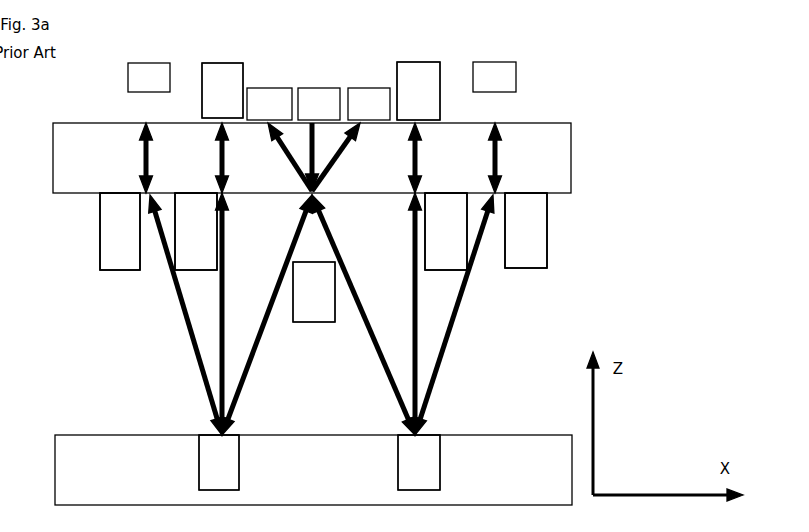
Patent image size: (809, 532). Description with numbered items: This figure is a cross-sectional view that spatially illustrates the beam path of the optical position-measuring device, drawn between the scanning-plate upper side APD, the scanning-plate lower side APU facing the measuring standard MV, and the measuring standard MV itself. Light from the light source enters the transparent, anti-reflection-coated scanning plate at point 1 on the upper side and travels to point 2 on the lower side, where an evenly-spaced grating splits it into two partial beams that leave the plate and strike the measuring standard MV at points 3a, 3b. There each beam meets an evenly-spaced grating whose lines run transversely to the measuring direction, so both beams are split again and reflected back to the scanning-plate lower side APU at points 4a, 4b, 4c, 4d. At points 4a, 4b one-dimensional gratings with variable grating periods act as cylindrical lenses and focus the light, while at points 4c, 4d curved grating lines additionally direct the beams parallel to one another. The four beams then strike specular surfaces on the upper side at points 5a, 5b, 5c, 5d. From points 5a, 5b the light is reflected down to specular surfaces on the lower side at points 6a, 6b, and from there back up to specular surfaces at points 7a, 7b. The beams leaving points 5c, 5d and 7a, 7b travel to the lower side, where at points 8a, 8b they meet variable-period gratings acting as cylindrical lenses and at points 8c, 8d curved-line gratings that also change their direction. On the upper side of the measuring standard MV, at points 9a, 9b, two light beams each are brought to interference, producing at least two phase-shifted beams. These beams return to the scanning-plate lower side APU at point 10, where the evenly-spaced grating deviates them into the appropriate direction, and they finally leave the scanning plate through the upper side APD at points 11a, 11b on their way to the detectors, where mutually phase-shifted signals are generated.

The light entry point 1 is at (319, 139).
The grating impact point 2 is at (318, 315).
The measuring standard impact point 3a is at (419, 462).
The measuring standard impact point 3b is at (219, 462).
The lower-side impact point 4a is at (438, 314).
The lower-side impact point 4b is at (202, 314).
The lower-side impact point 4c is at (480, 314).
The lower-side impact point 4d is at (161, 314).
The upper-side specular impact point 5a is at (418, 127).
The upper-side specular impact point 5b is at (222, 128).
The upper-side specular impact point 5c is at (494, 127).
The upper-side specular impact point 5d is at (149, 128).
The lower-side specular impact point 6a is at (446, 231).
The lower-side specular impact point 6b is at (196, 231).
The upper-side specular impact point 7a is at (418, 91).
The upper-side specular impact point 7b is at (222, 90).
The lower-side lens grating impact point 8a is at (446, 231).
The lower-side lens grating impact point 8b is at (196, 231).
The lower-side curved grating impact point 8c is at (526, 230).
The lower-side curved grating impact point 8d is at (120, 231).
The interference point 9a is at (419, 462).
The interference point 9b is at (219, 462).
The deviation grating point 10 is at (314, 292).
The light exit point 11a is at (351, 139).
The light exit point 11b is at (279, 139).
The scanning-plate upper side APD is at (552, 114).
The scanning-plate lower side APU is at (562, 205).
The measuring standard MV is at (500, 452).